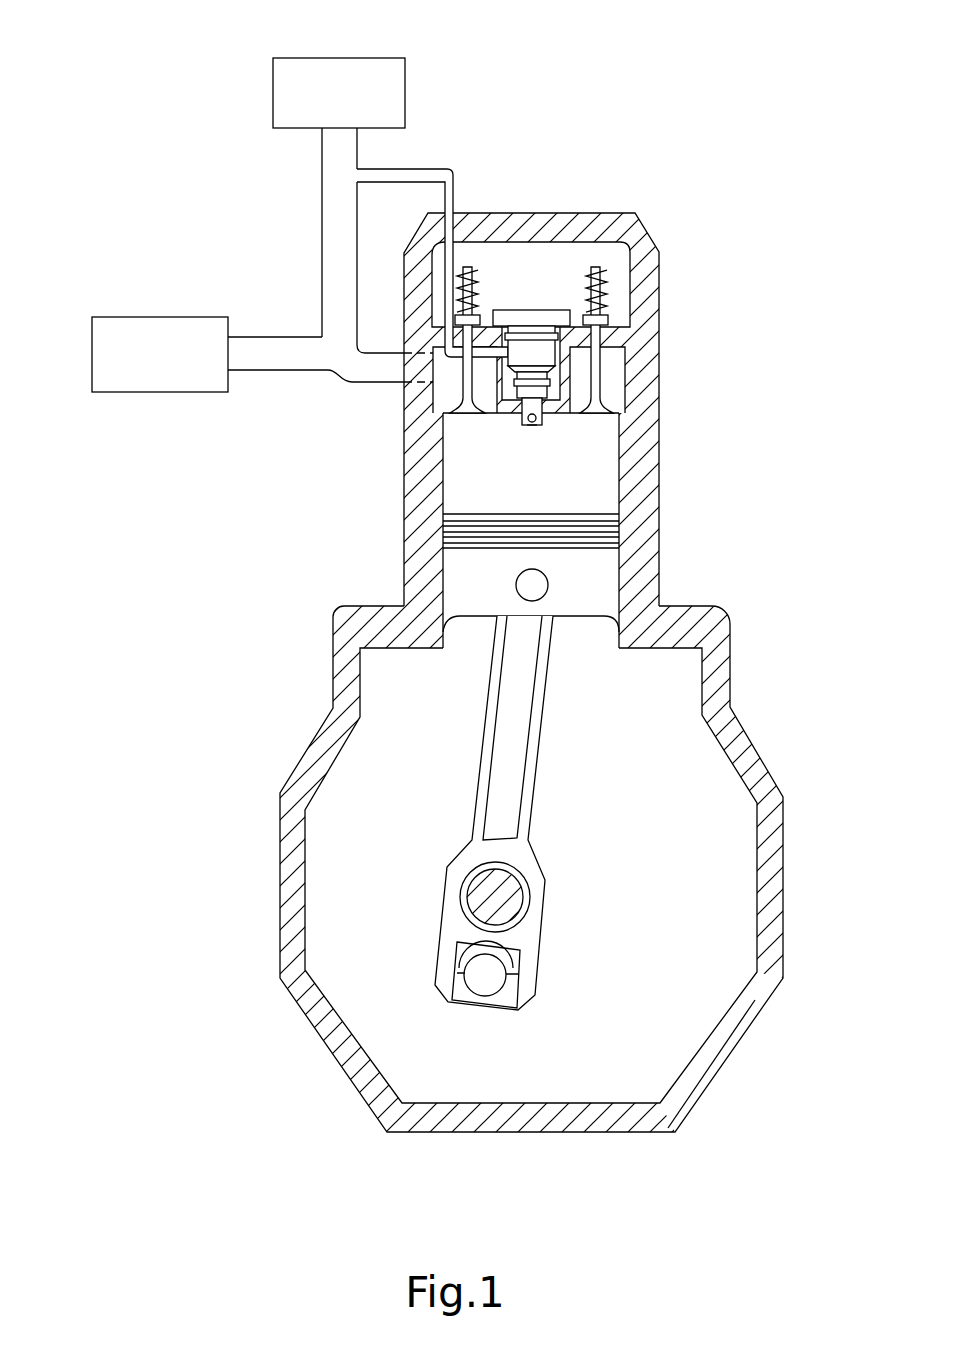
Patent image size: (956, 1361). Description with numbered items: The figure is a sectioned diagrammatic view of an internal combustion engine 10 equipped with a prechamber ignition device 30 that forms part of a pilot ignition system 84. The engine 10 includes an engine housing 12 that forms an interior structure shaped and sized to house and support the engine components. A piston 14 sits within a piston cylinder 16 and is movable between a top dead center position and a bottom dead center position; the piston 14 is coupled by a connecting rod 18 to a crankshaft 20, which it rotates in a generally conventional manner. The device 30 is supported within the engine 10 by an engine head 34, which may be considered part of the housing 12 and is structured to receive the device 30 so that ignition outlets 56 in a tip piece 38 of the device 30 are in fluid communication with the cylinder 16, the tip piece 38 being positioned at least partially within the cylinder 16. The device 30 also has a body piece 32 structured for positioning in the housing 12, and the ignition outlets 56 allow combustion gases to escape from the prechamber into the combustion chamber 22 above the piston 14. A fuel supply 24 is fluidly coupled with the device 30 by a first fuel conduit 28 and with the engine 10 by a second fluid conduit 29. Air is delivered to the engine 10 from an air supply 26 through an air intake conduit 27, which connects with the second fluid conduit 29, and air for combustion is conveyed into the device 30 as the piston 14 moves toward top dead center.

The internal combustion engine 10 is at (702, 176).
The engine housing 12 is at (363, 610).
The piston 14 is at (603, 587).
The piston cylinder 16 is at (618, 497).
The connecting rod 18 is at (544, 735).
The crankshaft 20 is at (538, 940).
The combustion chamber 22 is at (476, 485).
The fuel supply 24 is at (292, 58).
The air supply 26 is at (112, 317).
The air intake conduit 27 is at (284, 370).
The first fuel conduit 28 is at (424, 169).
The second fluid conduit 29 is at (321, 208).
The prechamber ignition device 30 is at (537, 365).
The body piece 32 is at (546, 338).
The engine head 34 is at (537, 426).
The tip piece 38 is at (521, 421).
The ignition outlets 56 is at (535, 427).
The pilot ignition system 84 is at (708, 350).